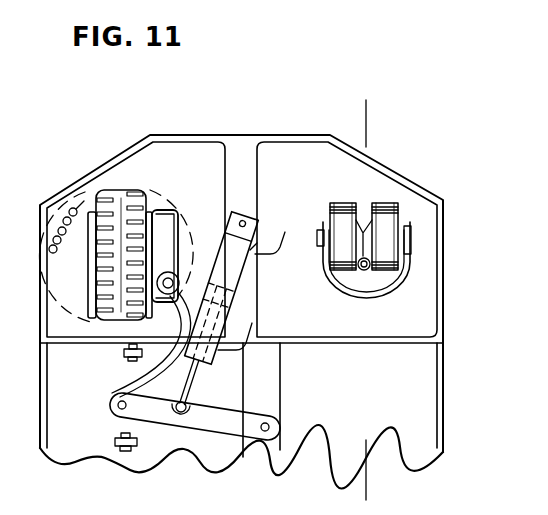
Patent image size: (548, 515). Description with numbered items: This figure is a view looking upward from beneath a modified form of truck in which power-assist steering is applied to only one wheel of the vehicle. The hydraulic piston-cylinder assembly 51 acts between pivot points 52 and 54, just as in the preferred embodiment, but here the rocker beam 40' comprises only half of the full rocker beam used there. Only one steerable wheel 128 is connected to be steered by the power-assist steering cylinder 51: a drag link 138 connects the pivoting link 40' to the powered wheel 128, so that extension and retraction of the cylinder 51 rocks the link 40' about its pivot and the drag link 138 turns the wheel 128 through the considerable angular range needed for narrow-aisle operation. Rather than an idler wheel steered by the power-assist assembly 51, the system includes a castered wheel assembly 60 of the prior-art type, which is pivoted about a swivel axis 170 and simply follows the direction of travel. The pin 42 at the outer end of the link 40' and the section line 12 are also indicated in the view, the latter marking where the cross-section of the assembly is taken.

The section line 12- 12 is at (372, 488).
The steerable wheel 128 is at (118, 188).
The drag link 138 is at (140, 383).
The rocker beam 40' is at (195, 411).
The pivot pin 42 is at (269, 426).
The pivot point 54 is at (178, 413).
The hydraulic piston-cylinder assembly 51 is at (236, 291).
The pivot point 52 is at (246, 222).
The castered wheel assembly 60 is at (364, 207).
The swivel axis 170 is at (362, 268).